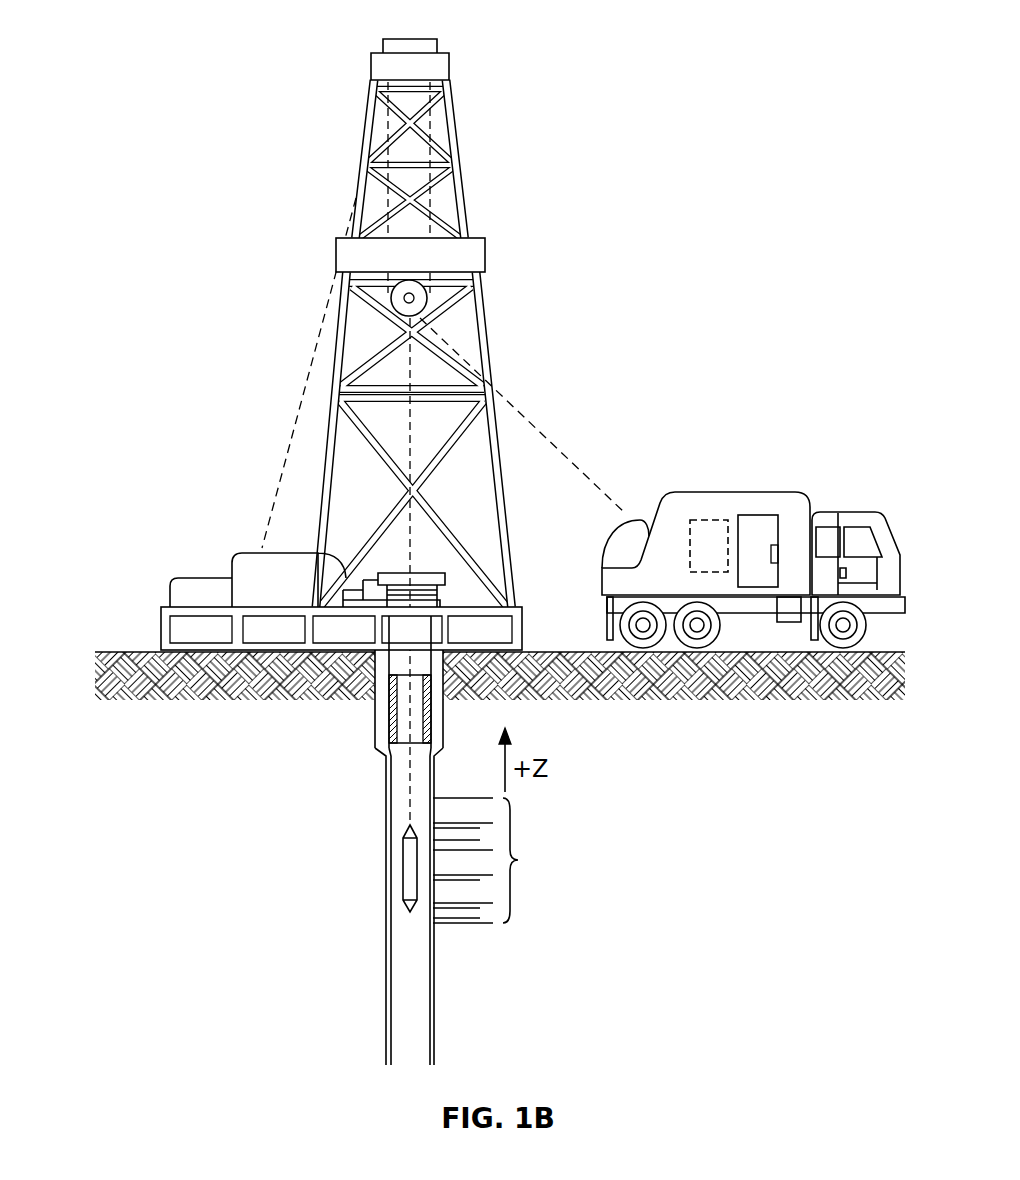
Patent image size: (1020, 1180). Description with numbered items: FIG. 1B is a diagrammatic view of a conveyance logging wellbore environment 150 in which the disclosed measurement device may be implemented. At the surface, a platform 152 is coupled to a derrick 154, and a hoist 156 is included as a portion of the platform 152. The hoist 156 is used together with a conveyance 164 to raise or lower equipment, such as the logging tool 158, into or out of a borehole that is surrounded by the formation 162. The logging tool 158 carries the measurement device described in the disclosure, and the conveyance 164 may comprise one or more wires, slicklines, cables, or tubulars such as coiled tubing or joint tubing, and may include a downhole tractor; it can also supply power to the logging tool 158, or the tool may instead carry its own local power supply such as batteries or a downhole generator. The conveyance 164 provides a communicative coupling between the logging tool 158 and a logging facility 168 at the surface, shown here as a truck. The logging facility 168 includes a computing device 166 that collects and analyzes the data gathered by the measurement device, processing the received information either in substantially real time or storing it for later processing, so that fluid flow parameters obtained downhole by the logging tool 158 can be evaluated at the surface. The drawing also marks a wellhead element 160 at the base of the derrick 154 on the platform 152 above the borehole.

The conveyance logging wellbore environment 150 is at (310, 108).
The platform 152 is at (523, 631).
The derrick 154 is at (510, 569).
The hoist 156 is at (428, 294).
The logging tool 158 is at (408, 866).
The rotary table / wellhead 160 is at (425, 573).
The formation 162 is at (500, 860).
The conveyance 164 is at (541, 433).
The computing device 166 is at (709, 520).
The logging facility 168 is at (770, 515).